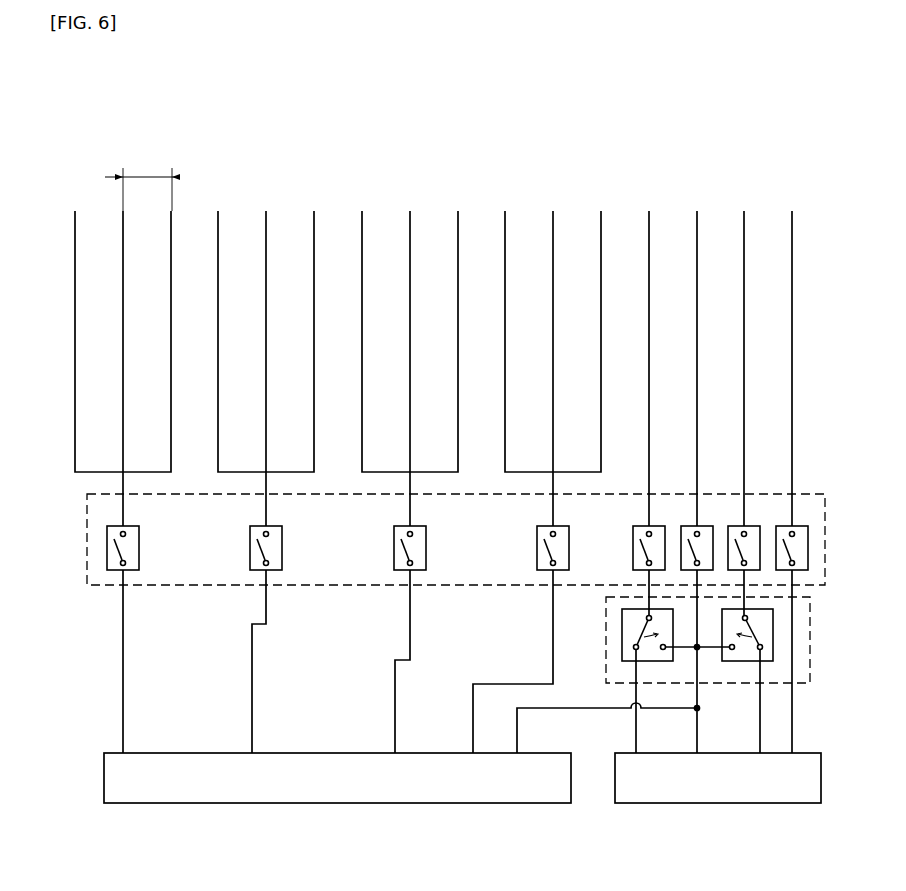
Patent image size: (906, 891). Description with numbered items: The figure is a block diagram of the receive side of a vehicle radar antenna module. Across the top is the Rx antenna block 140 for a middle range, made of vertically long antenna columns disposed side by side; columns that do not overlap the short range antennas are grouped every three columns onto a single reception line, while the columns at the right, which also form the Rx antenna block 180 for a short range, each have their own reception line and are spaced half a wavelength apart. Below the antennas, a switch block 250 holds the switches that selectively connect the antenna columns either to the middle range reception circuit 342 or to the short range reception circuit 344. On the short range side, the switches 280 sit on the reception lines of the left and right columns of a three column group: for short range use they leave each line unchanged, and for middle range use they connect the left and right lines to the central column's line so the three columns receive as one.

The Rx antenna block for a middle range 140 is at (765, 160).
The Rx antenna block for a short range 180 is at (793, 160).
The switch unit 250 is at (87, 585).
The switches 280 is at (810, 683).
The middle range reception circuit 342 is at (322, 803).
The short range reception circuit 344 is at (735, 803).